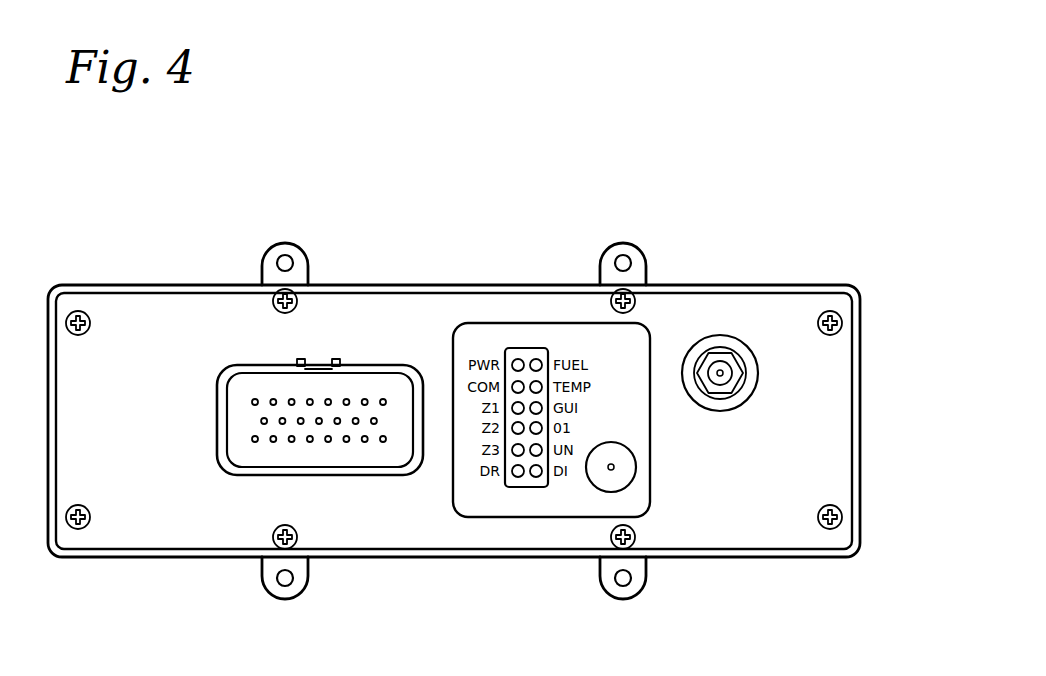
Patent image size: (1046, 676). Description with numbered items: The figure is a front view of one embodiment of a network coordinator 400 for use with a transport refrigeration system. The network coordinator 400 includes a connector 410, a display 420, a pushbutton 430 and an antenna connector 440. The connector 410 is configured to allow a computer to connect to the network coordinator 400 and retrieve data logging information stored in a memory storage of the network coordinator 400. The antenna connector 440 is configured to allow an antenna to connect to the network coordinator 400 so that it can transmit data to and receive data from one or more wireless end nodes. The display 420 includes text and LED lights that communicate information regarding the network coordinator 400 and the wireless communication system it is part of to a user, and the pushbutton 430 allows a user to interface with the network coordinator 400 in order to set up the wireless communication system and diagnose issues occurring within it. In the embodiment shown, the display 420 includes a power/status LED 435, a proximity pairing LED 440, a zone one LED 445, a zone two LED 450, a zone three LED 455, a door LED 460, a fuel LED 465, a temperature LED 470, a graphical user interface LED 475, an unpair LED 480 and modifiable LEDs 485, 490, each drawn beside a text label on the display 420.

The network coordinator 400 is at (309, 190).
The connector 410 is at (268, 458).
The display 420 is at (527, 488).
The pushbutton 430 is at (636, 473).
The power/status LED 435 is at (517, 358).
The proximity pairing LED 440 is at (513, 382).
The zone 1 LED 445 is at (512, 404).
The zone 2 LED 450 is at (512, 432).
The zone 3 LED 455 is at (513, 454).
The door LED 460 is at (515, 477).
The fuel LED 465 is at (537, 359).
The temperature LED 470 is at (540, 382).
The graphical user interface LED 475 is at (542, 404).
The unpair LED 480 is at (542, 455).
The modifiable LED 485 is at (542, 432).
The modifiable LED 490 is at (537, 478).